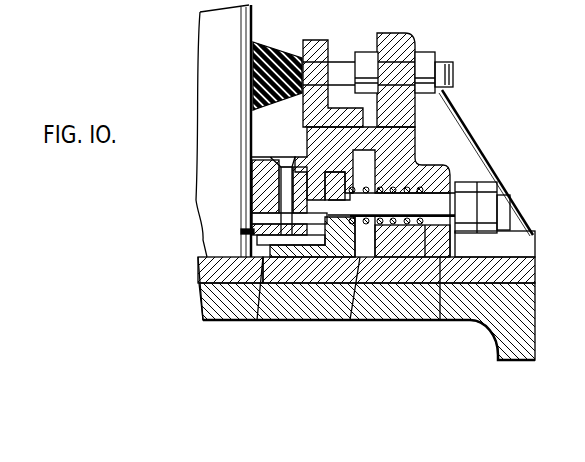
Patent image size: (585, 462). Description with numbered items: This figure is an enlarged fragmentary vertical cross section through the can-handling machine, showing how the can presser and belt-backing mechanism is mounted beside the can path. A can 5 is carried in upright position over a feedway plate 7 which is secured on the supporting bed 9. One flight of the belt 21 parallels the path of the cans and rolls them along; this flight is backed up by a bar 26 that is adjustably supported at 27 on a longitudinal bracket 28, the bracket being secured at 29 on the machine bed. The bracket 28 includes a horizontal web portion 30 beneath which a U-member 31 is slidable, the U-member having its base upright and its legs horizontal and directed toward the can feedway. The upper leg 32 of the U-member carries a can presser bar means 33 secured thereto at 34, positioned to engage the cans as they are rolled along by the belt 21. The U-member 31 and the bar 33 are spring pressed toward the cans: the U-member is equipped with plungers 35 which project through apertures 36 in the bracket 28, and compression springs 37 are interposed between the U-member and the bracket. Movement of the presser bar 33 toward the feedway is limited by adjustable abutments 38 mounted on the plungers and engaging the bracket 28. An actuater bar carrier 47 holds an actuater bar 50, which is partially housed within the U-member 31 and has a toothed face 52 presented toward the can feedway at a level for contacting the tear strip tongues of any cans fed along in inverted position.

The can 5 is at (243, 28).
The feedway plate 7 is at (522, 262).
The supporting bed 9 is at (310, 298).
The belt 21 is at (243, 82).
The bar 26 is at (318, 48).
The adjustable support 27 is at (448, 72).
The longitudinal bracket 28 is at (402, 40).
The securing means 29 is at (536, 238).
The horizontal web portion 30 is at (396, 133).
The U-member 31 is at (353, 173).
The upper leg 32 is at (268, 157).
The can presser bar means 33 is at (262, 200).
The securing means 34 is at (287, 183).
The plunger 35 is at (367, 220).
The aperture 36 is at (440, 320).
The compression spring 37 is at (352, 320).
The adjustable abutment 38 is at (467, 207).
The actuater bar carrier 47 is at (257, 320).
The actuater bar 50 is at (230, 270).
The toothed face 52 is at (241, 232).